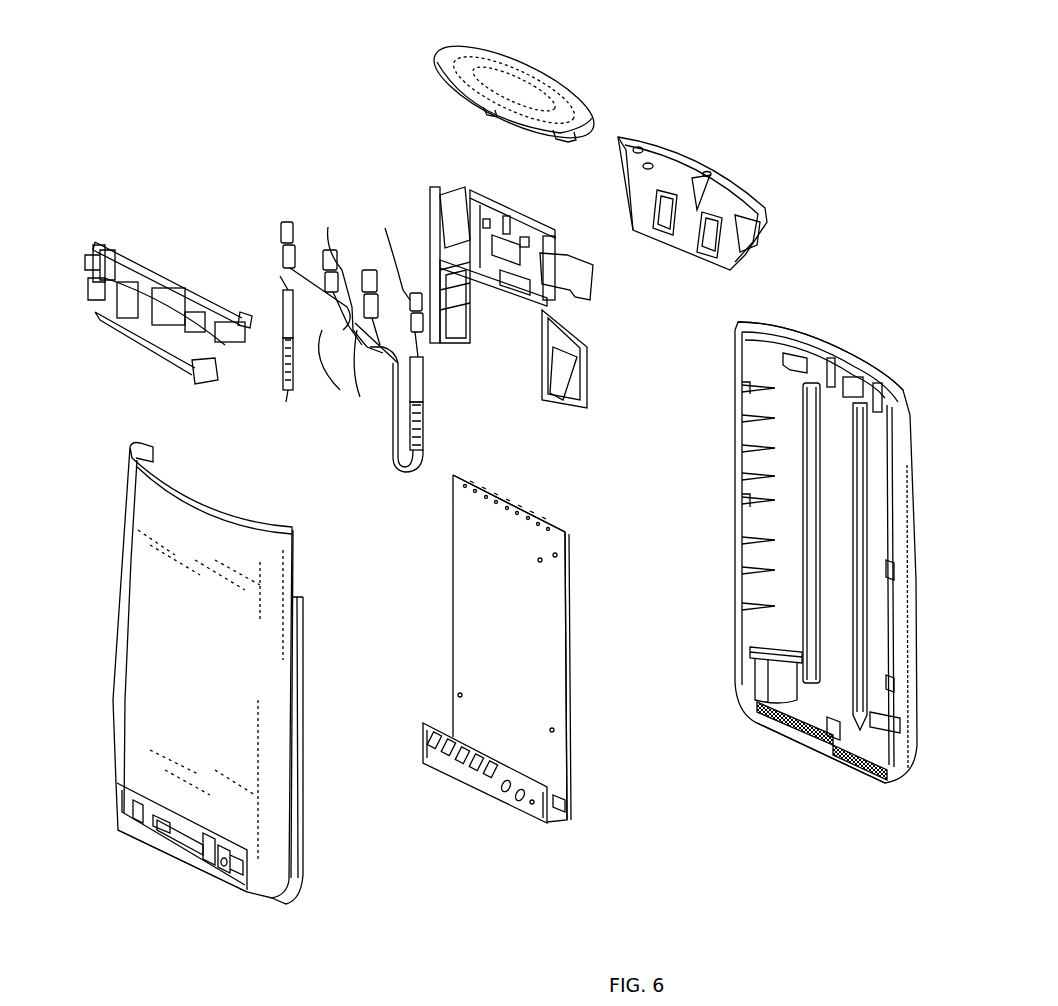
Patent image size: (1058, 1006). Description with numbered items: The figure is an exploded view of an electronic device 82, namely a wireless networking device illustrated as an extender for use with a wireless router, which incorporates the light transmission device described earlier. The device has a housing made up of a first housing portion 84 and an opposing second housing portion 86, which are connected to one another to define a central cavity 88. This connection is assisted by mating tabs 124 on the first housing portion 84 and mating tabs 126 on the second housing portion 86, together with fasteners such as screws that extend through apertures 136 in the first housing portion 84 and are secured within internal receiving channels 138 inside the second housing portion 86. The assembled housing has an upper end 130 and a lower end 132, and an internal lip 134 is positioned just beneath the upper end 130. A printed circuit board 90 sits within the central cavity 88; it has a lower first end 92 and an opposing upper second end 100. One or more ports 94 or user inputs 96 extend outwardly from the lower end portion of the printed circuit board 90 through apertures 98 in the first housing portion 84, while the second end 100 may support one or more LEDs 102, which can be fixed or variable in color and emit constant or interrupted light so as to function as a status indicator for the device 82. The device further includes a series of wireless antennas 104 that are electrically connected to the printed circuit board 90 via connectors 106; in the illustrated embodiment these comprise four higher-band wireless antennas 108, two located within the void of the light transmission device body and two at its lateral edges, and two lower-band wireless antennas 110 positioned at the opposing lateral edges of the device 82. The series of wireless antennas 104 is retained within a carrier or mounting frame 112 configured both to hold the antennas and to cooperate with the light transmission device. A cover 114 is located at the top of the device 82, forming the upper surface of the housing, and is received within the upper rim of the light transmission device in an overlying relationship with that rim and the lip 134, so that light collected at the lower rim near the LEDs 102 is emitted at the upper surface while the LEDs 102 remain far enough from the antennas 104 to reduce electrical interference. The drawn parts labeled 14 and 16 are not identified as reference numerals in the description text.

The electronic device 82 is at (258, 90).
The cover 114 is at (537, 88).
The top cover 16 is at (726, 166).
The mounting frame 112 is at (560, 229).
The housing bracket 14 is at (150, 360).
The series of wireless antennas 104 is at (260, 224).
The 5G wireless antennas 108 is at (293, 226).
The connectors 106 is at (380, 365).
The 2G wireless antennas 110 is at (278, 317).
The first housing portion 84 is at (113, 758).
The upper end 130 is at (182, 492).
The internal lip 134 is at (157, 458).
The mating tabs 124 is at (303, 583).
The apertures 136 is at (130, 797).
The apertures 98 is at (172, 882).
The lower end 132 is at (250, 898).
The printed circuit board 90 is at (567, 718).
The LEDs 102 is at (532, 513).
The second end 100 is at (563, 532).
The first end 92 is at (560, 827).
The ports 94 is at (480, 793).
The user inputs 96 is at (527, 807).
The second housing portion 86 is at (915, 757).
The central cavity 88 is at (797, 733).
The mating tabs 126 is at (740, 388).
The internal receiving channels 138 is at (737, 682).